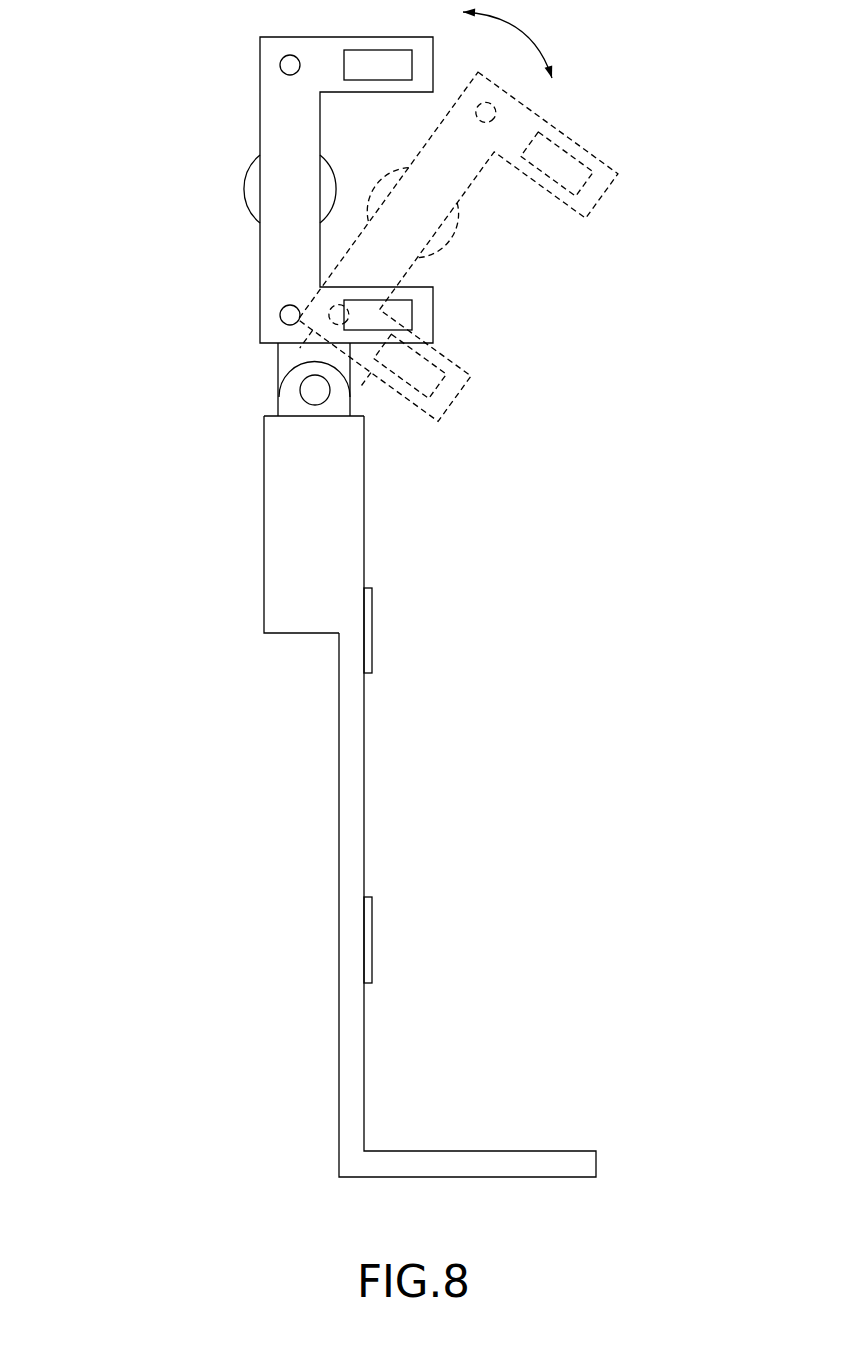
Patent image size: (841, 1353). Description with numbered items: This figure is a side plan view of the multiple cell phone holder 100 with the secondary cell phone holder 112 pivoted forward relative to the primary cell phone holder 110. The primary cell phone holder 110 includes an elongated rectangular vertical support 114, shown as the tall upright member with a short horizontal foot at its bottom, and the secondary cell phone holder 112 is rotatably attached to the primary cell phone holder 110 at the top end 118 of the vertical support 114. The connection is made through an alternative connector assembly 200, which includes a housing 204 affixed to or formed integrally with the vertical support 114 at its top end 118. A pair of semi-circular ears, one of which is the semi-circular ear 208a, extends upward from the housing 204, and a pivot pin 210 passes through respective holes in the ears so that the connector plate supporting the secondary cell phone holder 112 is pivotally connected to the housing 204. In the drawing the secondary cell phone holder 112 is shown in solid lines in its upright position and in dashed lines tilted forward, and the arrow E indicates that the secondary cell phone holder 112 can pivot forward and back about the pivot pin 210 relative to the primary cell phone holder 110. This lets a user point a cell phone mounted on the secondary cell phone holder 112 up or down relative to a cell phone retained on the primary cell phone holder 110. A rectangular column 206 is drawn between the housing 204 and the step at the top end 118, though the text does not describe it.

The multiple cell phone holder 100 is at (155, 84).
The secondary cell phone holder 112 is at (645, 142).
The arrow E is at (519, 44).
The connector assembly 200 is at (135, 410).
The housing 204 is at (278, 352).
The semi-circular ear 208a is at (277, 410).
The pivot pin 210 is at (318, 390).
The support column 206 is at (263, 570).
The primary cell phone holder 110 is at (238, 945).
The top end 118 is at (337, 637).
The vertical support 114 is at (365, 763).